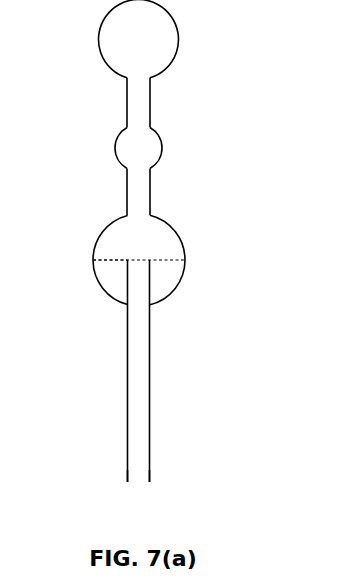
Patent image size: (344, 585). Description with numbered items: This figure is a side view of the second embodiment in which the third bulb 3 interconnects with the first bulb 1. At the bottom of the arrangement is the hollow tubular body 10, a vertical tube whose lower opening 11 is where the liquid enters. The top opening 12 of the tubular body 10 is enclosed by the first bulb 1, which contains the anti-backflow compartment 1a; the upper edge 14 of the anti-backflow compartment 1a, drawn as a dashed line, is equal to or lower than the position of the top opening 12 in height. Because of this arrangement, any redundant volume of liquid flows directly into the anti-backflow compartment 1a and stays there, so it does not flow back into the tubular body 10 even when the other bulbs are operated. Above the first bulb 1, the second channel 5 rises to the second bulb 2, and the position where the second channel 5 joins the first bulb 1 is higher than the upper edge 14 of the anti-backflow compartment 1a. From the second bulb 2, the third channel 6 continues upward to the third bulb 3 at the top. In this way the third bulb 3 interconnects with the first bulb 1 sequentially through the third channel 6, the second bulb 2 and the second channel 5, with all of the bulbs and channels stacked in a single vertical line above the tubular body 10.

The first bulb 1 is at (183, 248).
The anti-backflow compartment 1a is at (168, 278).
The second bulb 2 is at (128, 152).
The third bulb 3 is at (106, 34).
The second channel 5 is at (125, 200).
The third channel 6 is at (130, 108).
The hollow tubular body 10 is at (139, 372).
The opening 11 is at (140, 477).
The top opening 12 is at (139, 258).
The upper edge 14 is at (110, 262).